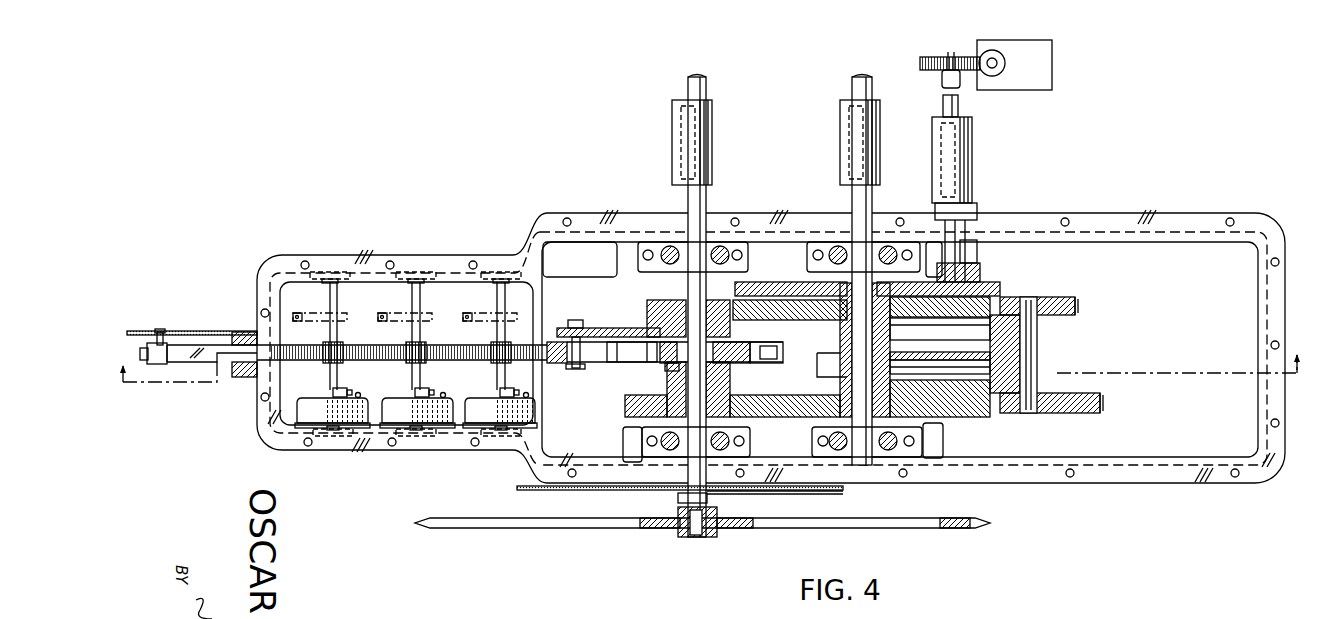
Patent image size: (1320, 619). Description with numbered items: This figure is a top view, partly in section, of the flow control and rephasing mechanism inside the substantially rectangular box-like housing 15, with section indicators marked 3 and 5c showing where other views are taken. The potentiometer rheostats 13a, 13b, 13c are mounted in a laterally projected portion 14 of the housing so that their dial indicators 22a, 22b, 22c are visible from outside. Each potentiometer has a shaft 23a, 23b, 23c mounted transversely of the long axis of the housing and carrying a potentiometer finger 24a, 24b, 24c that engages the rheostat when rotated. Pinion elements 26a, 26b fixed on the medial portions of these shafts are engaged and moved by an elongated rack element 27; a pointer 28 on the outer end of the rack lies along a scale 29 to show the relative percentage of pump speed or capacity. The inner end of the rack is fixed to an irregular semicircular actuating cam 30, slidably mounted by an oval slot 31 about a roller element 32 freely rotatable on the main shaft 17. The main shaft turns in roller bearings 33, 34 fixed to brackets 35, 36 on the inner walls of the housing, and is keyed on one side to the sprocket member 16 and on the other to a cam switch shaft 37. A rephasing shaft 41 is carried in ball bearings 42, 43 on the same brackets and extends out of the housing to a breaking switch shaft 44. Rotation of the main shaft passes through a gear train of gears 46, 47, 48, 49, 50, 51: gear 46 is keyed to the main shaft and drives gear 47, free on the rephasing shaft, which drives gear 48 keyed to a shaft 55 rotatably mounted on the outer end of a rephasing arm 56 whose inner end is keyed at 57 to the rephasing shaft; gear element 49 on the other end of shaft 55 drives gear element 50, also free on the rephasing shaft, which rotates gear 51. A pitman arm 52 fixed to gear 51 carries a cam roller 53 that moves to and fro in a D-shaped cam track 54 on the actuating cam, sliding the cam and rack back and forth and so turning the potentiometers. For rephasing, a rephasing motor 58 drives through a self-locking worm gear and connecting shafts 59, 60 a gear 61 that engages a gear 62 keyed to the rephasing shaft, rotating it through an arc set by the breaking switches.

The section line 3- 3 is at (710, 356).
The section line 5c is at (1102, 366).
The potentiometer rheostat 13a is at (305, 412).
The potentiometer rheostat 13b is at (393, 415).
The potentiometer rheostat 13c is at (480, 415).
The laterally projected portion 14 is at (413, 262).
The housing 15 is at (1052, 210).
The sprocket member 16 is at (655, 530).
The main shaft 17 is at (690, 445).
The dial indicator 22a is at (334, 440).
The dial indicator 22b is at (425, 440).
The dial indicator 22c is at (505, 440).
The potentiometer shaft 23a is at (330, 323).
The potentiometer shaft 23b is at (413, 323).
The potentiometer shaft 23c is at (497, 323).
The potentiometer finger 24a is at (333, 392).
The potentiometer finger 24b is at (415, 392).
The potentiometer finger 24c is at (500, 392).
The pinion element 26a is at (340, 345).
The pinion element 26b is at (422, 346).
The rack element 27 is at (355, 362).
The pointer 28 is at (160, 338).
The scale 29 is at (180, 332).
The actuating cam 30 is at (598, 344).
The oval slot 31 is at (633, 362).
The roller element 32 is at (668, 366).
The roller bearing 33 is at (665, 448).
The roller bearing 34 is at (666, 252).
The bracket 35 is at (622, 439).
The bracket 36 is at (617, 263).
The cam switch shaft 37 is at (672, 129).
The rephasing shaft 41 is at (860, 318).
The ball bearing 42 is at (896, 452).
The ball bearing 43 is at (876, 252).
The breaking switch shaft 44 is at (880, 129).
The gear 46 is at (625, 410).
The gear 47 is at (950, 412).
The gear 48 is at (1102, 410).
The gear element 49 is at (1078, 308).
The gear element 50 is at (965, 306).
The gear 51 is at (648, 308).
The pitman arm 52 is at (612, 328).
The cam roller 53 is at (571, 326).
The cam track or guide 54 is at (764, 348).
The shaft 55 is at (1050, 352).
The rephasing arm 56 is at (950, 352).
The keyed connection 57 is at (896, 350).
The rephasing motor 58 is at (1052, 78).
The connecting shaft 59 is at (960, 106).
The connecting shaft 60 is at (972, 183).
The gear 61 is at (1002, 277).
The gear 62 is at (783, 282).